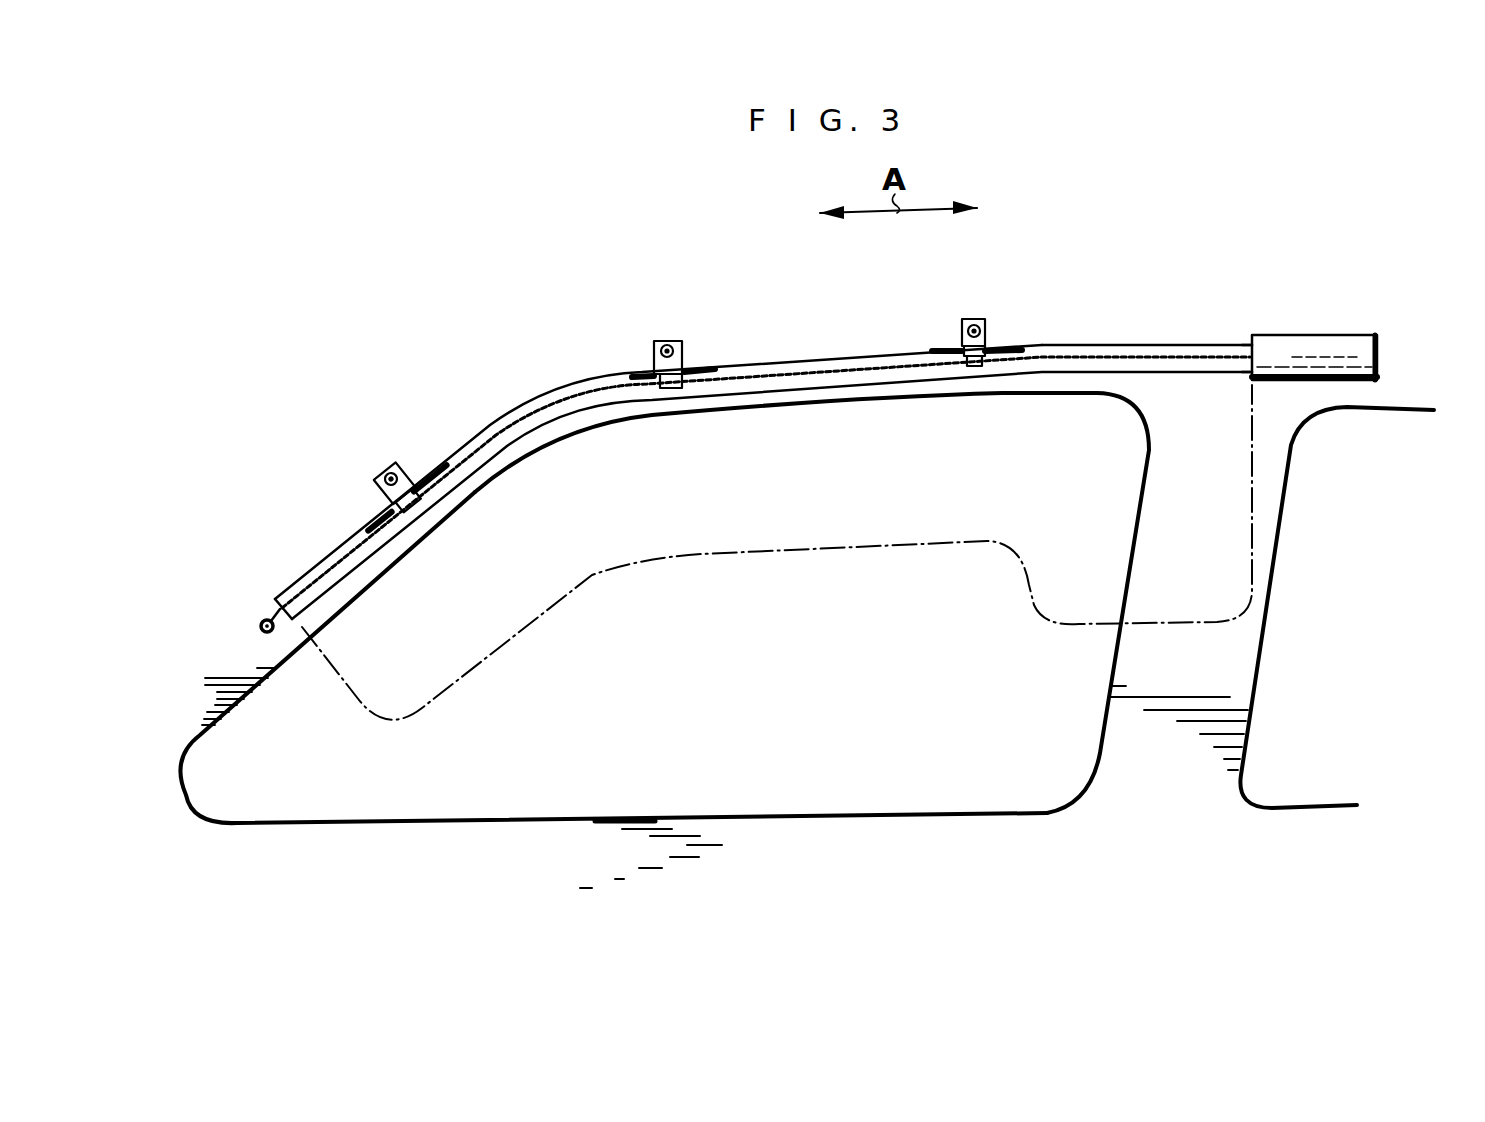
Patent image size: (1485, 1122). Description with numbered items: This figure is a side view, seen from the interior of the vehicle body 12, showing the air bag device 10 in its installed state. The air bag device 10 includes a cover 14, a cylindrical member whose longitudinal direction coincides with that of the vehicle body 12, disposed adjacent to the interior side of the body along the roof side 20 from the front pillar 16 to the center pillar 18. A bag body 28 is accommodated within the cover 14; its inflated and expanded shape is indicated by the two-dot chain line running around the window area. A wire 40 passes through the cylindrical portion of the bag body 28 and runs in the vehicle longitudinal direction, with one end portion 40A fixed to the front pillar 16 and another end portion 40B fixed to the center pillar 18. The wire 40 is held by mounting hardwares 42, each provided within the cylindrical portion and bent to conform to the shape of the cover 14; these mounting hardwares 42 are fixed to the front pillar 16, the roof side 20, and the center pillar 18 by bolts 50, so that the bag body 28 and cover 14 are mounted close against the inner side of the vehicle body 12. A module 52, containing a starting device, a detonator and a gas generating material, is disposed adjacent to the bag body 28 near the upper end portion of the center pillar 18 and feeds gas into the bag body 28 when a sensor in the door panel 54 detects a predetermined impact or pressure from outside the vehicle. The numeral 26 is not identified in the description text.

The air bag device 10 is at (1185, 262).
The vehicle body 12 is at (1439, 336).
The cover 14 is at (1101, 345).
The front pillar 16 is at (267, 673).
The center pillar 18 is at (1096, 740).
The roof side 20 is at (762, 406).
The drive cable 26 is at (390, 535).
The bag body 28 is at (778, 558).
The wire 40 is at (551, 399).
The one end portion of the wire 40A is at (261, 618).
The another end portion of the wire 40B is at (1245, 352).
The mounting hardware 42 is at (406, 478).
The bolt 50 is at (388, 475).
The module 52 is at (1358, 335).
The door panel 54 is at (855, 845).